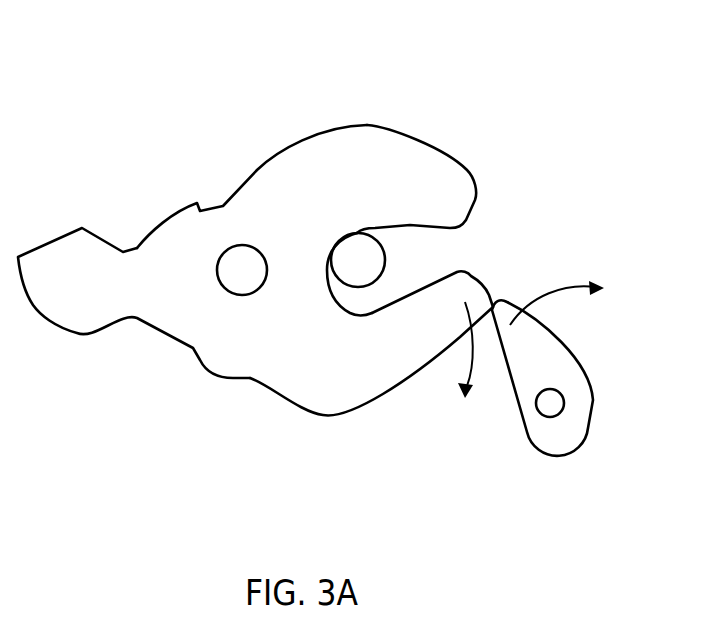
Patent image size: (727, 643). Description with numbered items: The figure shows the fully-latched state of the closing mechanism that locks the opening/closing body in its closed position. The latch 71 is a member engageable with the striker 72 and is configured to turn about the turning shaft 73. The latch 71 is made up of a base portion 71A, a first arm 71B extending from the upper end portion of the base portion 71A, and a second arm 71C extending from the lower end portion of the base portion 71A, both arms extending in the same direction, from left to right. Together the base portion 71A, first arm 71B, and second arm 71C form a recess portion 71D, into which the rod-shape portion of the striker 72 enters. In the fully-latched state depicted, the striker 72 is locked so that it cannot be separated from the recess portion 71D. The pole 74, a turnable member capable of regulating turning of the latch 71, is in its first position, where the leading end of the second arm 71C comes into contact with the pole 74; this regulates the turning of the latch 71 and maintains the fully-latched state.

The latch 71 is at (363, 78).
The base portion 71A is at (297, 273).
The first arm 71B is at (427, 190).
The second arm 71C is at (450, 307).
The recess portion 71D is at (336, 293).
The striker 72 is at (355, 252).
The turning shaft 73 is at (240, 258).
The pole 74 is at (568, 448).